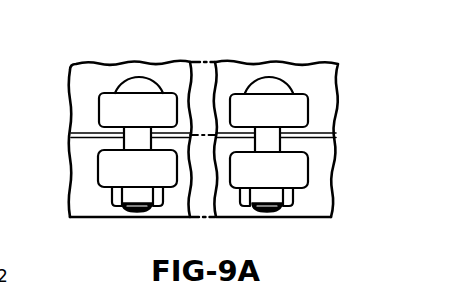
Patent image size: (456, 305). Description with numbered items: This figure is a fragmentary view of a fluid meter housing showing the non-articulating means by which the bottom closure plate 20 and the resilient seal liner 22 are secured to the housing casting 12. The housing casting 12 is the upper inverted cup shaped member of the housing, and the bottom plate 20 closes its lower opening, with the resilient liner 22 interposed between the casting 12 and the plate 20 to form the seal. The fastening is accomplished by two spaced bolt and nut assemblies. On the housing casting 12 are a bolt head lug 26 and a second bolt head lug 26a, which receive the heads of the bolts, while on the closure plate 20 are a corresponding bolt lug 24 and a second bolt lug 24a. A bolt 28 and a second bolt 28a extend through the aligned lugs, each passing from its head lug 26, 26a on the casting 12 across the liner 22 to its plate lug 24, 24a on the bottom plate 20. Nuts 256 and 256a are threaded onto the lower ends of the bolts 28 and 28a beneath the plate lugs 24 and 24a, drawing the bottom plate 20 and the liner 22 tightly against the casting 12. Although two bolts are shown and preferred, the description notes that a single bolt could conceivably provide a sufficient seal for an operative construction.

The housing casting 12 is at (90, 83).
The bottom plate 20 is at (88, 198).
The resilient liner 22 is at (71, 135).
The bolt lug 24 is at (98, 170).
The bolt lug 24a is at (310, 170).
The bolt head lug 26 is at (172, 93).
The bolt head lug 26a is at (235, 93).
The bolt 28 is at (110, 143).
The bolt 28a is at (308, 148).
The nut 256 is at (112, 206).
The nut 256a is at (290, 207).